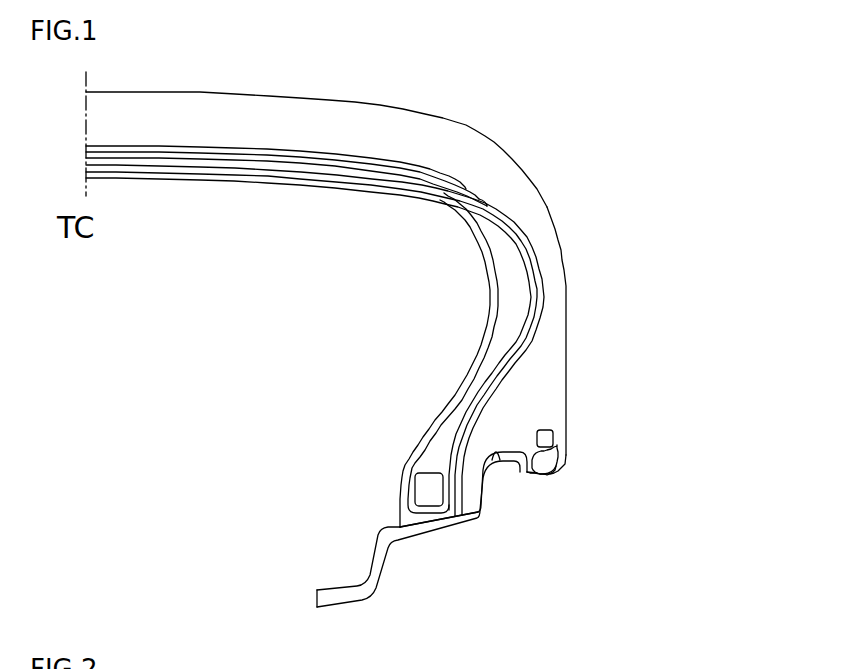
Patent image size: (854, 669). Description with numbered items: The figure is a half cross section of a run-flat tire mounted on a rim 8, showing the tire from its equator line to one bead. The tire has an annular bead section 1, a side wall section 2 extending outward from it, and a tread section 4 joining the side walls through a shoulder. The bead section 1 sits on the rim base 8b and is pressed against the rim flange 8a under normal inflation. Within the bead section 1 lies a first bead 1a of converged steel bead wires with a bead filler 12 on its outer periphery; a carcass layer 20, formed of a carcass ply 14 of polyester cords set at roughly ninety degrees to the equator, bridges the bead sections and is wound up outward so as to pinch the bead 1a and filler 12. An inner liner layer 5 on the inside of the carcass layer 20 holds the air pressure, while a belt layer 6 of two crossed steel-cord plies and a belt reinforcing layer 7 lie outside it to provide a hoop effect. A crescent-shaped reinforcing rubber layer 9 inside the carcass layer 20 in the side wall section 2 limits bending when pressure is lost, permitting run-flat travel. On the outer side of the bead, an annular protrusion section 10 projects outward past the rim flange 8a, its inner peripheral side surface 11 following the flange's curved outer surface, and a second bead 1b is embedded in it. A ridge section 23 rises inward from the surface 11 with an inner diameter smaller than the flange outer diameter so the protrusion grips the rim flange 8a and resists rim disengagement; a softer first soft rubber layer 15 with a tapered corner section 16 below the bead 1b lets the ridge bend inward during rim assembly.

The bead section 1 is at (367, 512).
The first bead 1a is at (415, 490).
The second bead 1b is at (553, 430).
The side wall section 2 is at (576, 233).
The tread section 4 is at (268, 86).
The inner liner layer 5 is at (230, 180).
The belt layer 6 is at (312, 175).
The belt reinforcing layer 7 is at (367, 163).
The rim 8 is at (384, 590).
The rim flange 8a is at (522, 473).
The rim base 8b is at (437, 529).
The reinforcing rubber layer 9 is at (487, 227).
The annular protrusion section 10 is at (580, 469).
The inner peripheral side surface 11 is at (497, 454).
The bead filler 12 is at (437, 447).
The carcass ply 14 is at (467, 400).
The first soft rubber layer 15 is at (556, 446).
The corner section 16 is at (548, 475).
The carcass layer 20 is at (502, 204).
The ridge section 23 is at (556, 467).